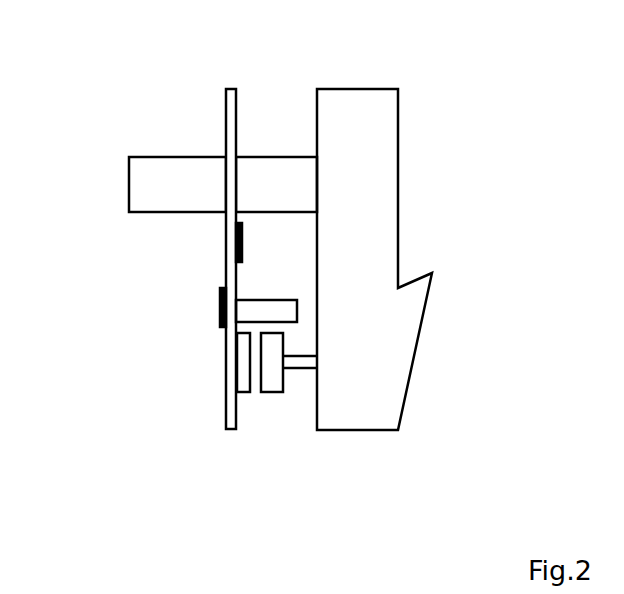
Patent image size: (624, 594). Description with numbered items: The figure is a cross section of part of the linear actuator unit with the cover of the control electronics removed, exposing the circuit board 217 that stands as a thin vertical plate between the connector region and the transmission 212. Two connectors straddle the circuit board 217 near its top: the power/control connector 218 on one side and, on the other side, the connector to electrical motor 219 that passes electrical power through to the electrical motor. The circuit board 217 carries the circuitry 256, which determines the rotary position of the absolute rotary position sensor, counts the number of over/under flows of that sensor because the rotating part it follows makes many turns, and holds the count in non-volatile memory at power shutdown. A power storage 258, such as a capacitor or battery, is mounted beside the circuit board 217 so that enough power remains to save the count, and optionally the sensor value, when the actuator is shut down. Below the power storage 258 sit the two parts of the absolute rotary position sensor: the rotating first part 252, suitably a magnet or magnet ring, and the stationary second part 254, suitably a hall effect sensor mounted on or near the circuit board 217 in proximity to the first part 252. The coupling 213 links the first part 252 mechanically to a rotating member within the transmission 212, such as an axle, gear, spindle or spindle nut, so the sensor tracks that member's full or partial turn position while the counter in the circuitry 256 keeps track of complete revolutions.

The transmission 212 is at (372, 430).
The coupling to absolute position sensor 213 is at (302, 369).
The circuit board 217 is at (226, 127).
The power/control connector 218 is at (175, 157).
The connector to electrical motor 219 is at (268, 157).
The first part of absolute position sensor 252 is at (268, 393).
The second part of absolute position sensor 254 is at (242, 393).
The circuitry to determine the rotary position 256 is at (222, 303).
The power storage 258 is at (268, 300).